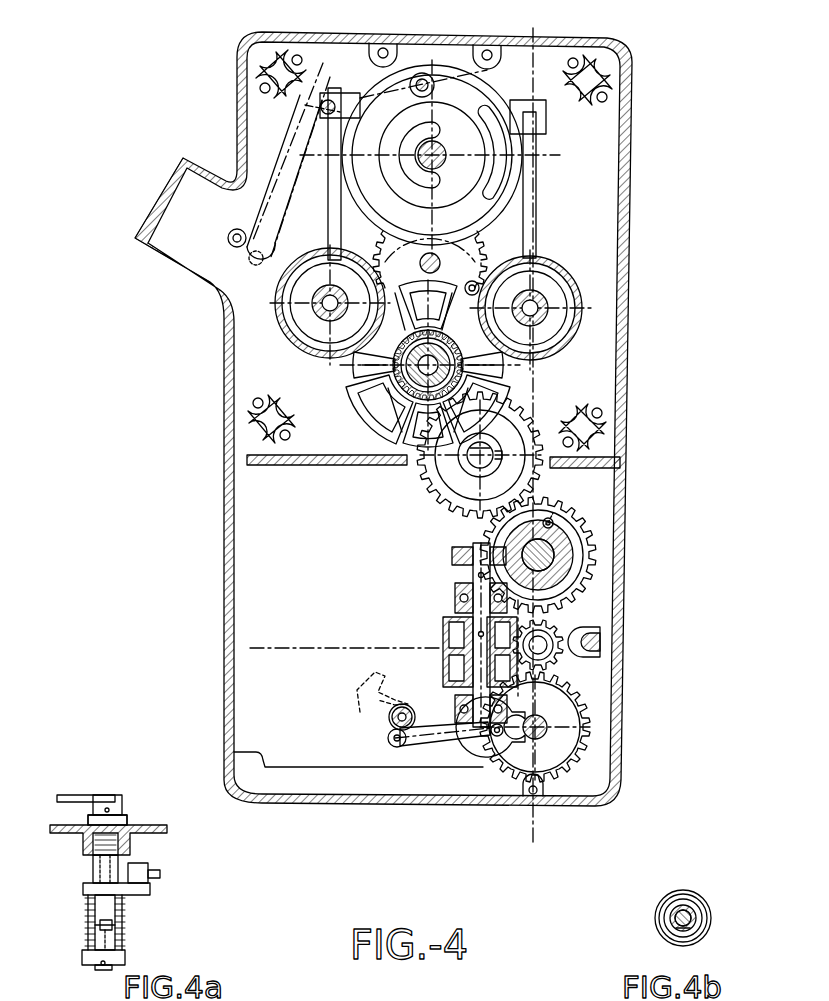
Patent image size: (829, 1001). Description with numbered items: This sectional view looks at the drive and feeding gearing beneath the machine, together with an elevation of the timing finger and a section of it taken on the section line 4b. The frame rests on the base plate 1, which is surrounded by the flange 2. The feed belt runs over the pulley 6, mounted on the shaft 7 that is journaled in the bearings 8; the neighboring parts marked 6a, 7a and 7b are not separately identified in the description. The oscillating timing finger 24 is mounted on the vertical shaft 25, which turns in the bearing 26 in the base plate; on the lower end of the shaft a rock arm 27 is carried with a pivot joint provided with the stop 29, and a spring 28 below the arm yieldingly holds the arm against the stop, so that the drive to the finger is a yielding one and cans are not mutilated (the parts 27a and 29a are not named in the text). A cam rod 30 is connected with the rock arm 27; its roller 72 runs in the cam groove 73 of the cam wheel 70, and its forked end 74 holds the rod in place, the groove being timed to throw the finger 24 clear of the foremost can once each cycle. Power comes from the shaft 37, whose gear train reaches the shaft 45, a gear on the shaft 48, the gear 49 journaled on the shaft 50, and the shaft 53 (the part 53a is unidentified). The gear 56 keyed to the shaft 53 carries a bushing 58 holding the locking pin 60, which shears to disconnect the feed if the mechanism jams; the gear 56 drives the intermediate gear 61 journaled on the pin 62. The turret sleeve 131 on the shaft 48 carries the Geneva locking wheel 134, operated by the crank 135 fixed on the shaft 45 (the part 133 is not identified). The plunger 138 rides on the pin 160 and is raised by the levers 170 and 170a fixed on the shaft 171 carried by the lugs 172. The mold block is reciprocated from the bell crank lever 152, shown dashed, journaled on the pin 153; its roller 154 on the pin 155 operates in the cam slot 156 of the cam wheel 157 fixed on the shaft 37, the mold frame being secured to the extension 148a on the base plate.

In FIG. 4, the base plate 1 is at (277, 312).
In FIG. 4A, the base plate 1 is at (168, 832).
In FIG. 4, the flange 2 is at (530, 437).
In FIG. 4, the pulley 6 is at (444, 630).
In FIG. 4, the bracket slot 6a is at (447, 652).
In FIG. 4, the shaft 7 is at (473, 617).
In FIG. 4, the shaft collar 7a is at (455, 550).
In FIG. 4, the shaft collar 7b is at (477, 562).
In FIG. 4, the bearings 8 is at (456, 594).
In FIG. 4, the oscillating finger 24 is at (377, 692).
In FIG. 4A, the oscillating finger 24 is at (76, 795).
In FIG. 4, the shaft 25 is at (392, 720).
In FIG. 4A, the shaft 25 is at (110, 815).
In FIG. 4B, the shaft 25 is at (665, 897).
In FIG. 4A, the bearing 26 is at (127, 820).
In FIG. 4, the rock arm 27 is at (392, 745).
In FIG. 4A, the rock arm 27 is at (150, 893).
In FIG. 4B, the rock arm 27 is at (700, 897).
In FIG. 4A, the pin end 27a is at (118, 932).
In FIG. 4B, the pin end 27a is at (700, 935).
In FIG. 4A, the spring 28 is at (90, 905).
In FIG. 4B, the spring 28 is at (705, 914).
In FIG. 4A, the stop 29 is at (95, 945).
In FIG. 4B, the stop 29 is at (668, 912).
In FIG. 4A, the nut portion 29a is at (92, 927).
In FIG. 4B, the nut portion 29a is at (663, 930).
In FIG. 4, the cam rod 30 is at (430, 745).
In FIG. 4A, the cam rod 30 is at (148, 863).
In FIG. 4, the shaft 37 is at (446, 160).
In FIG. 4, the shaft 45 is at (422, 262).
In FIG. 4, the shaft 48 is at (410, 407).
In FIG. 4, the gear 49 is at (415, 502).
In FIG. 4, the shaft 50 is at (466, 465).
In FIG. 4, the shaft 53 is at (580, 595).
In FIG. 4, the gear hub 53a is at (570, 553).
In FIG. 4, the gear 56 is at (556, 565).
In FIG. 4, the bushing 58 is at (551, 522).
In FIG. 4, the locking pin 60 is at (560, 515).
In FIG. 4, the gear 61 is at (600, 640).
In FIG. 4, the pin 62 is at (605, 668).
In FIG. 4, the cam wheel 70 is at (572, 722).
In FIG. 4, the roller 72 is at (490, 732).
In FIG. 4, the cam groove 73 is at (563, 747).
In FIG. 4, the forked end 74 is at (578, 763).
In FIG. 4, the sleeve 131 is at (392, 410).
In FIG. 4, the blade 133 is at (500, 390).
In FIG. 4, the locking wheel 134 is at (507, 368).
In FIG. 4, the crank 135 is at (500, 252).
In FIG. 4, the plunger 138 is at (317, 320).
In FIG. 4, the extension 148a is at (164, 258).
In FIG. 4, the bell crank lever 152 is at (268, 200).
In FIG. 4, the pin 153 is at (325, 113).
In FIG. 4, the roller 154 is at (437, 80).
In FIG. 4, the pin 155 is at (423, 80).
In FIG. 4, the cam slot 156 is at (398, 90).
In FIG. 4, the cam wheel 157 is at (483, 97).
In FIG. 4, the pin 160 is at (320, 300).
In FIG. 4, the lever 170 is at (333, 208).
In FIG. 4, the lever 170a is at (536, 216).
In FIG. 4, the shaft 171 is at (328, 100).
In FIG. 4, the ears or lugs 172 is at (380, 80).
In FIG. 4A, the section line 4b is at (100, 923).